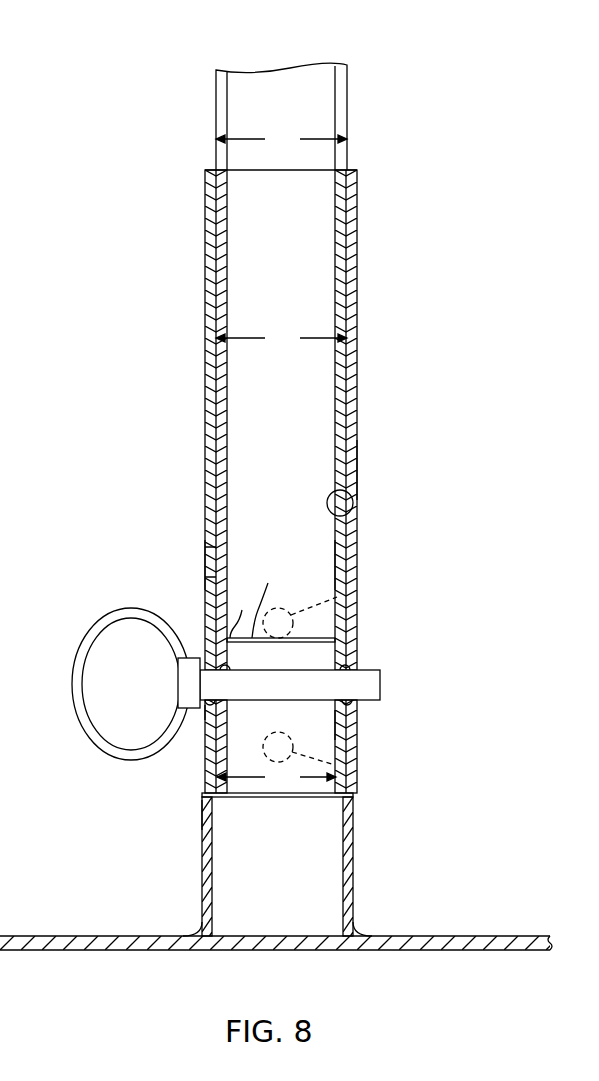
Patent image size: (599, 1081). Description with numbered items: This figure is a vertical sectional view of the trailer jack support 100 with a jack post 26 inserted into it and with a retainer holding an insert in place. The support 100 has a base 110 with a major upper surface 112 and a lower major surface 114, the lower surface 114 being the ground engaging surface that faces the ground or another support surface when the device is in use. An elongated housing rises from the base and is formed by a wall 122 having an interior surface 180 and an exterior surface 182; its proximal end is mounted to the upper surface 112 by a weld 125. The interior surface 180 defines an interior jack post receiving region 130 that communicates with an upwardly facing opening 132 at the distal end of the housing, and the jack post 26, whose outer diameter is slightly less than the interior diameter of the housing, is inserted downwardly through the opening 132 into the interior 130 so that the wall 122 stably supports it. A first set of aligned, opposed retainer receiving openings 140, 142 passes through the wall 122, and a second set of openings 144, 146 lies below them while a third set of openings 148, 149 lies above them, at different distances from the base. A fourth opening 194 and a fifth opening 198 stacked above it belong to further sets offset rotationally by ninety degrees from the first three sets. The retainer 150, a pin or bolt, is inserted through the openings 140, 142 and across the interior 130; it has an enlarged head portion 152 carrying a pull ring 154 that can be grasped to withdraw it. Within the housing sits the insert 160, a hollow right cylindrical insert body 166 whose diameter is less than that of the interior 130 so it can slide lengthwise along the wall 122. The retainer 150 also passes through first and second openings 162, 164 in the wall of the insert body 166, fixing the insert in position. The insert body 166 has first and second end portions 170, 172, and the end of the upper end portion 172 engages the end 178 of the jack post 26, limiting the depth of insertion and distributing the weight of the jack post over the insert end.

The jack post 26 is at (348, 124).
The trailer jack support 100 is at (253, 538).
The base 110 is at (276, 937).
The major upper surface 112 is at (440, 936).
The lower major surface 114 is at (436, 950).
The wall 122 is at (358, 411).
The weld 125 is at (365, 927).
The interior jack post receiving region 130 is at (348, 637).
The upwardly facing opening 132 is at (341, 168).
The retainer receiving opening 140 is at (362, 703).
The retainer receiving opening 142 is at (196, 718).
The retainer receiving opening 144 is at (280, 866).
The retainer receiving opening 146 is at (205, 810).
The retainer receiving opening 148 is at (352, 562).
The retainer receiving opening 149 is at (210, 565).
The retainer 150 is at (317, 674).
The enlarged head portion 152 is at (188, 688).
The pull ring 154 is at (110, 684).
The insert 160 is at (328, 744).
The first opening 162 is at (354, 670).
The second opening 164 is at (230, 670).
The insert body 166 is at (313, 720).
The first end portion 170 is at (252, 797).
The second end portion 172 is at (272, 599).
The end of jack post 178 is at (245, 613).
The interior surface 180 is at (351, 505).
The exterior surface 182 is at (353, 473).
The opening 194 is at (358, 780).
The opening 198 is at (355, 593).